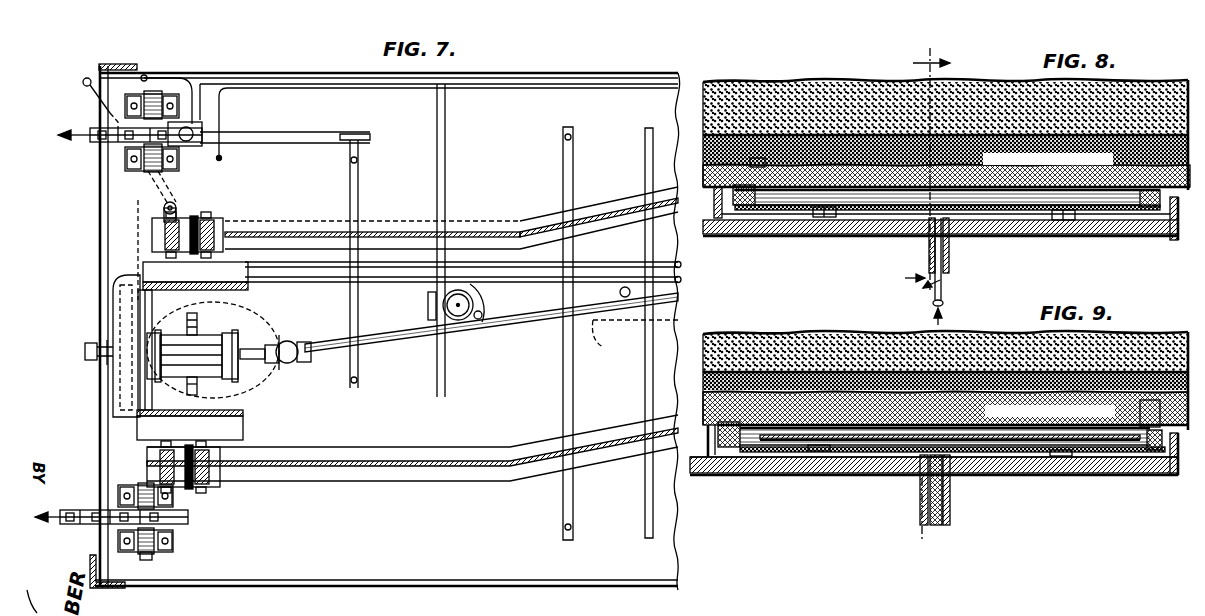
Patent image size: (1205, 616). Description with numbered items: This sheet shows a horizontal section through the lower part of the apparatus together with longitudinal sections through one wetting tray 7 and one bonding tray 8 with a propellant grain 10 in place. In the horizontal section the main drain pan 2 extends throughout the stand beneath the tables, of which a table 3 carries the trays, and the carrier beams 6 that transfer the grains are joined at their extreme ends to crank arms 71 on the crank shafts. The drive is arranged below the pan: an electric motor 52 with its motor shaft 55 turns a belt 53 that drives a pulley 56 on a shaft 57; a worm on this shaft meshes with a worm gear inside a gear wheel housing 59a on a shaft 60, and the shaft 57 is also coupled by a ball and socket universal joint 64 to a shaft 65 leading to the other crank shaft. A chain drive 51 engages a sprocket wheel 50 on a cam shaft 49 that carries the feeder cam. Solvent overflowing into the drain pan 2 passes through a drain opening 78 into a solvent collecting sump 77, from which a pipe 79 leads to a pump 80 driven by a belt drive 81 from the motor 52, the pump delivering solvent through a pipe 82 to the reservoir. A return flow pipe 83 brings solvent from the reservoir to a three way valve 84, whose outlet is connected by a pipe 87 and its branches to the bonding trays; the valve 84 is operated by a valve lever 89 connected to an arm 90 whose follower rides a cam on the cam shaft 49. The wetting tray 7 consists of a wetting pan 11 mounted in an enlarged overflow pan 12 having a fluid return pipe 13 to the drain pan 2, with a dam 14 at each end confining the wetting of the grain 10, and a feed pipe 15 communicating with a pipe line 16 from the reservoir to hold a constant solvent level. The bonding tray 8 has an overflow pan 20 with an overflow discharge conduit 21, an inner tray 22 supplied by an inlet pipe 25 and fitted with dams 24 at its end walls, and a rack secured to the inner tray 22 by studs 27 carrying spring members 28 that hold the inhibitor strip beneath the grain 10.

In FIG. 7, the main drain pan 2 is at (468, 562).
In FIG. 8, the table 3 is at (718, 234).
In FIG. 9, the table 3 is at (732, 475).
In FIG. 7, the carrier beam 6 is at (520, 210).
In FIG. 8, the wetting tray 7 is at (1027, 220).
In FIG. 9, the bonding tray 8 is at (712, 455).
In FIG. 8, the propellant grain 10 is at (1130, 88).
In FIG. 9, the propellant grain 10 is at (1128, 342).
In FIG. 8, the wetting pan 11 is at (1100, 250).
In FIG. 8, the overflow pan 12 is at (1166, 240).
In FIG. 9, the overflow pan 12 is at (1174, 454).
In FIG. 8, the fluid return pipe 13 is at (923, 320).
In FIG. 9, the fluid return pipe 13 is at (922, 498).
In FIG. 8, the dam 14 is at (1153, 167).
In FIG. 8, the feed pipe 15 is at (952, 290).
In FIG. 7, the pipe line 16 is at (221, 158).
In FIG. 9, the overflow pan 20 is at (775, 452).
In FIG. 9, the overflow discharge conduit 21 is at (930, 492).
In FIG. 9, the inner tray 22 is at (840, 455).
In FIG. 9, the dam 24 is at (1150, 400).
In FIG. 9, the inlet pipe 25 is at (950, 510).
In FIG. 9, the stud 27 is at (818, 452).
In FIG. 9, the spring member 28 is at (860, 438).
In FIG. 7, the shaft 49 is at (145, 560).
In FIG. 7, the sprocket wheel 50 is at (112, 522).
In FIG. 7, the chain drive 51 is at (68, 527).
In FIG. 7, the electric motor 52 is at (255, 318).
In FIG. 7, the belt 53 is at (128, 318).
In FIG. 7, the motor shaft 55 is at (100, 375).
In FIG. 7, the pulley 56 is at (118, 302).
In FIG. 7, the shaft 57 is at (165, 330).
In FIG. 7, the gear wheel housing 59a is at (200, 330).
In FIG. 7, the shaft 60 is at (198, 392).
In FIG. 7, the ball and socket universal joint 64 is at (290, 340).
In FIG. 7, the shaft 65 is at (500, 338).
In FIG. 7, the crank arm 71 is at (200, 262).
In FIG. 7, the solvent collecting sump 77 is at (635, 342).
In FIG. 7, the drain opening 78 is at (620, 293).
In FIG. 7, the pipe 79 is at (520, 222).
In FIG. 7, the pump 80 is at (176, 205).
In FIG. 7, the belt drive 81 is at (140, 255).
In FIG. 7, the pipe 82 is at (84, 80).
In FIG. 7, the return flow pipe 83 is at (160, 72).
In FIG. 7, the three way valve 84 is at (175, 145).
In FIG. 7, the pipe 87 is at (270, 130).
In FIG. 7, the valve lever 89 is at (190, 142).
In FIG. 7, the arm 90 is at (205, 80).